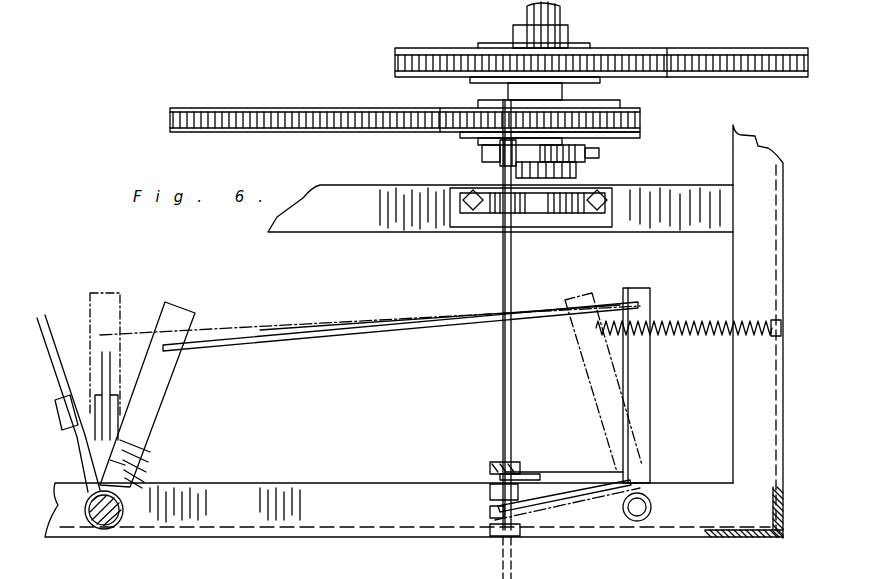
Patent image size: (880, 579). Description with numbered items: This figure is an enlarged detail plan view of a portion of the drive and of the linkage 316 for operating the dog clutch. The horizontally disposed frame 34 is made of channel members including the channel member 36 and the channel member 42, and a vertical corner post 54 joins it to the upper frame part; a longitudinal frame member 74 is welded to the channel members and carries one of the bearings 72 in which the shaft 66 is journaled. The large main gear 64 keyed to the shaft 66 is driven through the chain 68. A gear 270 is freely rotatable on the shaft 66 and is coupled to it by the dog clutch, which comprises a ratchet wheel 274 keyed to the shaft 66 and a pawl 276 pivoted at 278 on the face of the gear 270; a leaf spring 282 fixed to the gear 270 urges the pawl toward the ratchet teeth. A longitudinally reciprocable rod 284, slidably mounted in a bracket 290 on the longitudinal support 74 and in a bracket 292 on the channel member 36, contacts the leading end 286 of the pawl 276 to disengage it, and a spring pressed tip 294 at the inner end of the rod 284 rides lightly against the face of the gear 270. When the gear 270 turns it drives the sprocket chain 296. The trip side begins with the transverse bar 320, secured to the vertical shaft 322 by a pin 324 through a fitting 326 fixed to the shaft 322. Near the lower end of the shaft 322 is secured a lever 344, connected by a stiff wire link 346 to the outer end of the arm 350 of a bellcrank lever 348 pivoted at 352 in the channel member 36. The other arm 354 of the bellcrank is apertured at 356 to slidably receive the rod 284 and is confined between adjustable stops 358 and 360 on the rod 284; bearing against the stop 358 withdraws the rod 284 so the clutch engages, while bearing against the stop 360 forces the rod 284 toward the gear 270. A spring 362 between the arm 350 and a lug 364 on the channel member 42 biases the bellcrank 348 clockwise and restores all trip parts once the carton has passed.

The horizontally disposed frame 34 is at (295, 538).
The channel member 36 is at (285, 480).
The channel member 42 is at (733, 294).
The vertical corner post 54 is at (738, 540).
The main gear 64 is at (440, 50).
The shaft 66 is at (548, 14).
The chain 68 is at (738, 52).
The bearing 72 is at (565, 232).
The longitudinal frame member 74 is at (320, 232).
The gear 270 is at (637, 103).
The ratchet wheel 274 is at (576, 170).
The pawl 276 is at (484, 152).
The pivot 278 is at (540, 125).
The leaf spring 282 is at (600, 152).
The rod 284 is at (503, 295).
The leading end 286 is at (500, 166).
The bracket 290 is at (470, 232).
The bracket 292 is at (490, 537).
The spring pressed tip 294 is at (488, 140).
The sprocket chain 296 is at (316, 108).
The linkage 316 is at (225, 306).
The transverse bar 320 is at (43, 335).
The vertical shaft 322 is at (115, 530).
The pin 324 is at (110, 464).
The fitting 326 is at (120, 462).
The lever 344 is at (150, 403).
The wire link 346 is at (280, 352).
The bellcrank lever 348 is at (660, 444).
The arm 350 is at (650, 298).
The pivot 352 is at (652, 507).
The arm 354 is at (578, 480).
The aperture 356 is at (490, 464).
The adjustable stop 358 is at (488, 493).
The adjustable stop 360 is at (512, 465).
The spring 362 is at (688, 340).
The lug 364 is at (781, 336).